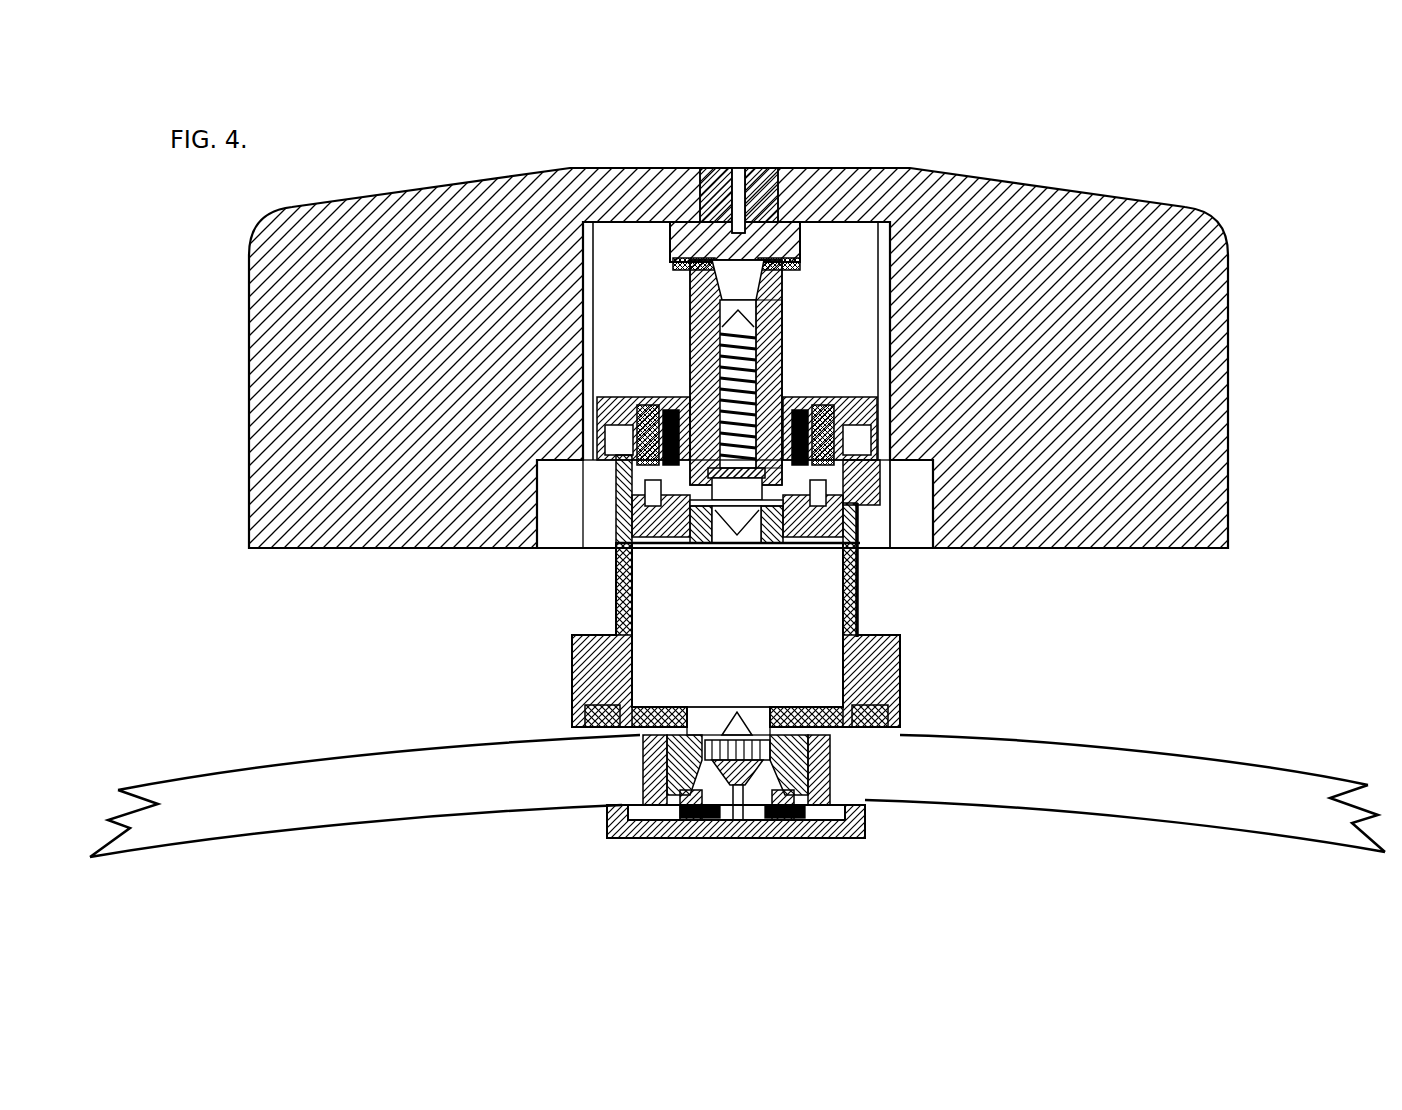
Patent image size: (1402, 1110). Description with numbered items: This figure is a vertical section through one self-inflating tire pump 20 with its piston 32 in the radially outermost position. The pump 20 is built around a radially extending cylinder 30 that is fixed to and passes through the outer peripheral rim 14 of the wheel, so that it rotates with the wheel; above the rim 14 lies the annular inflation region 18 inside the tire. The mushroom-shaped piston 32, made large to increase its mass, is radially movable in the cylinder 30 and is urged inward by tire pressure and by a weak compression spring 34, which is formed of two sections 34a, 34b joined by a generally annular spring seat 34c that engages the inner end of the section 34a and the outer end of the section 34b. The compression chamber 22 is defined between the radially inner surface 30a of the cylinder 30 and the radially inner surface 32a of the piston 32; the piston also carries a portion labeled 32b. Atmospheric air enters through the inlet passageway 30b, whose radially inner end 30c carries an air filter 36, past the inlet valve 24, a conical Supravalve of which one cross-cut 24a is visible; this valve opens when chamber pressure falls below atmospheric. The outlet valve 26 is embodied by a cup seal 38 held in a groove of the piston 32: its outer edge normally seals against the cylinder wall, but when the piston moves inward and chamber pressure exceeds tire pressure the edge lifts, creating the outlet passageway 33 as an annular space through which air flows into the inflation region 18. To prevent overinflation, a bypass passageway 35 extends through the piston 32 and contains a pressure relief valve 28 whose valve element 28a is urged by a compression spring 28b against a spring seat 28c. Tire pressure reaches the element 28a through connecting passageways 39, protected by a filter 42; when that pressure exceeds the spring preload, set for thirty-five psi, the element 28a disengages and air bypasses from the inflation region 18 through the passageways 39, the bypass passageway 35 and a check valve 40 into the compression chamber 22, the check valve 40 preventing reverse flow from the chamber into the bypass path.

The outer peripheral rim 14 is at (1025, 755).
The annular inflation region 18 is at (656, 258).
The self-inflating tire pump 20 is at (490, 135).
The compression chamber 22 is at (756, 627).
The inlet valve 24 is at (865, 685).
The cross-cut 24a is at (748, 722).
The outlet valve 26 is at (868, 543).
The pressure relief valve 28 is at (792, 330).
The valve element 28a is at (774, 306).
The compression spring 28b is at (722, 355).
The spring seat 28c is at (704, 302).
The cylinder 30 is at (885, 630).
The radially inner surface of the cylinder 30a is at (648, 712).
The inlet passageway 30b is at (722, 708).
The radially inner end of the inlet passageway 30c is at (878, 808).
The piston 32 is at (684, 528).
The radially inner surface of the piston 32a is at (818, 530).
The slot 32b is at (750, 168).
The outlet passageway 33 is at (866, 517).
The compression spring 34 is at (600, 513).
The spring section 34a is at (650, 403).
The spring section 34b is at (812, 403).
The spring seat 34c is at (622, 540).
The bypass passageway 35 is at (767, 365).
The air filter 36 is at (770, 822).
The cup seal 38 is at (862, 565).
The connecting passageways 39 is at (718, 255).
The check valve 40 is at (737, 532).
The filter 42 is at (684, 258).